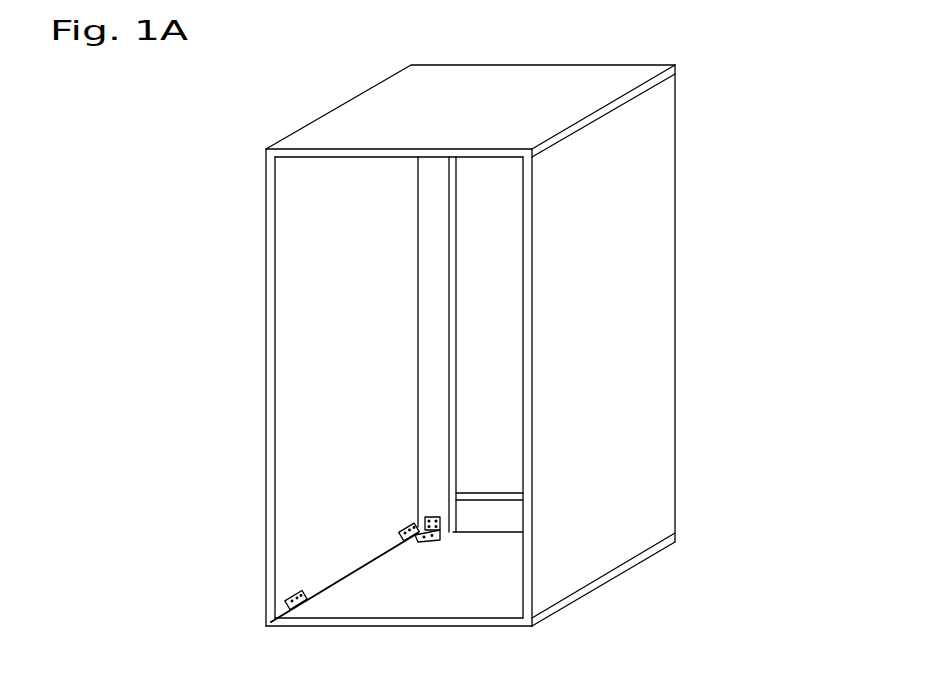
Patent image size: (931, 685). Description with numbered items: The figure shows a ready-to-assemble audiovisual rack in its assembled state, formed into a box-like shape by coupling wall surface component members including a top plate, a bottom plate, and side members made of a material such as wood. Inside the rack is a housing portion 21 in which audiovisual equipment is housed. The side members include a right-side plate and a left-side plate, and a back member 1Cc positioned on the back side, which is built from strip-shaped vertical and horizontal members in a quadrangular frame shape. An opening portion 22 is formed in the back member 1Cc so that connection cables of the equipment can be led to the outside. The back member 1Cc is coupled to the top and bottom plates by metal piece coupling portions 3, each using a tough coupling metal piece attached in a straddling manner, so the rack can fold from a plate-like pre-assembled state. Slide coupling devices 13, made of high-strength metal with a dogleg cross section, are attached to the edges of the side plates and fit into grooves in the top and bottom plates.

The back member 1Cc is at (483, 527).
The housing portion 21 is at (272, 418).
The opening portion 22 is at (452, 366).
The slide coupling device 13 is at (417, 527).
The metal piece coupling portion 3 is at (413, 551).